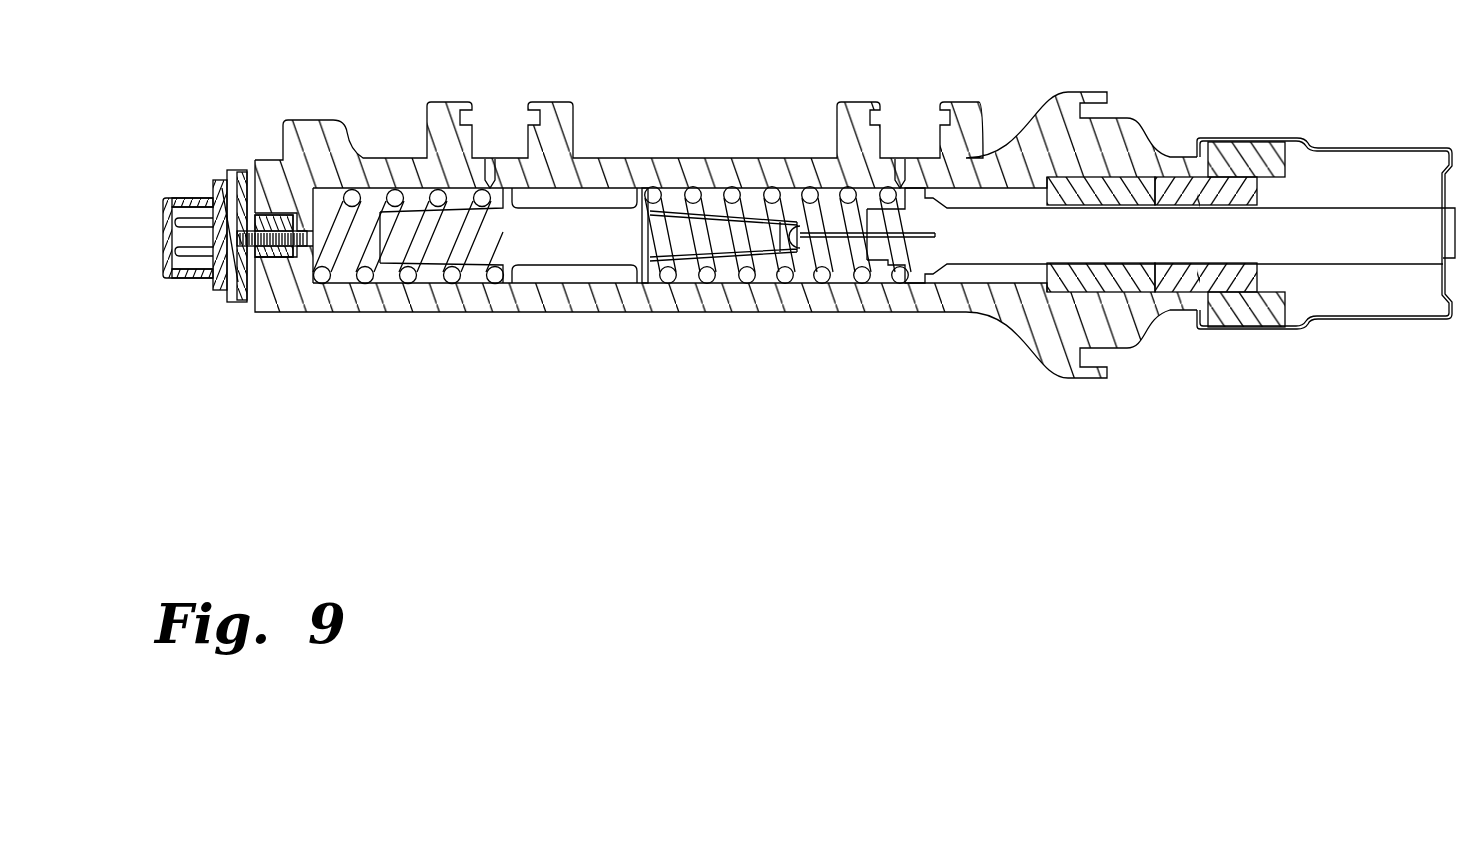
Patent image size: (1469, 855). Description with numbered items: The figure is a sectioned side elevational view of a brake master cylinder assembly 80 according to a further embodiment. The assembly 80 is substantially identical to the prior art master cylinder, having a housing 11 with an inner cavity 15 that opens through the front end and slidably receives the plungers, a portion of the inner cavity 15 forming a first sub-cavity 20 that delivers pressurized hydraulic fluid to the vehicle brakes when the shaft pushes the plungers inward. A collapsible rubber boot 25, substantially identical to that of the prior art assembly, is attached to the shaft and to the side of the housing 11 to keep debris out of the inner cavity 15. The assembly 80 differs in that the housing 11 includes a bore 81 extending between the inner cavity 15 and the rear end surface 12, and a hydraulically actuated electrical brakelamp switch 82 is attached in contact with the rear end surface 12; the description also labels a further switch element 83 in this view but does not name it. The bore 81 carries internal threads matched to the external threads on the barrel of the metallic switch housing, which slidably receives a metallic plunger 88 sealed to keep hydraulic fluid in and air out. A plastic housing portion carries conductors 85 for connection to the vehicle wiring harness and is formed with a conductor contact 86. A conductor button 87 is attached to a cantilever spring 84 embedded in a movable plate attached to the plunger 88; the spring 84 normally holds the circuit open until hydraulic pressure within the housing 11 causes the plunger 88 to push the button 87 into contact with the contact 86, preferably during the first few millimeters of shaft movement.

The housing 11 is at (512, 312).
The rear end surface 12 is at (227, 324).
The inner cavity 15 is at (446, 284).
The first sub-cavity 20 is at (359, 283).
The collapsible rubber boot 25 is at (1368, 318).
The brake master cylinder assembly 80 is at (781, 253).
The bore 81 is at (286, 144).
The hydraulically actuated electrical brakelamp switch 82 is at (160, 221).
The knob wall 83 is at (187, 196).
The cantilever spring 84 is at (233, 170).
The conductors 85 is at (173, 230).
The conductor contact 86 is at (243, 308).
The conductor button 87 is at (200, 278).
The plunger 88 is at (298, 227).